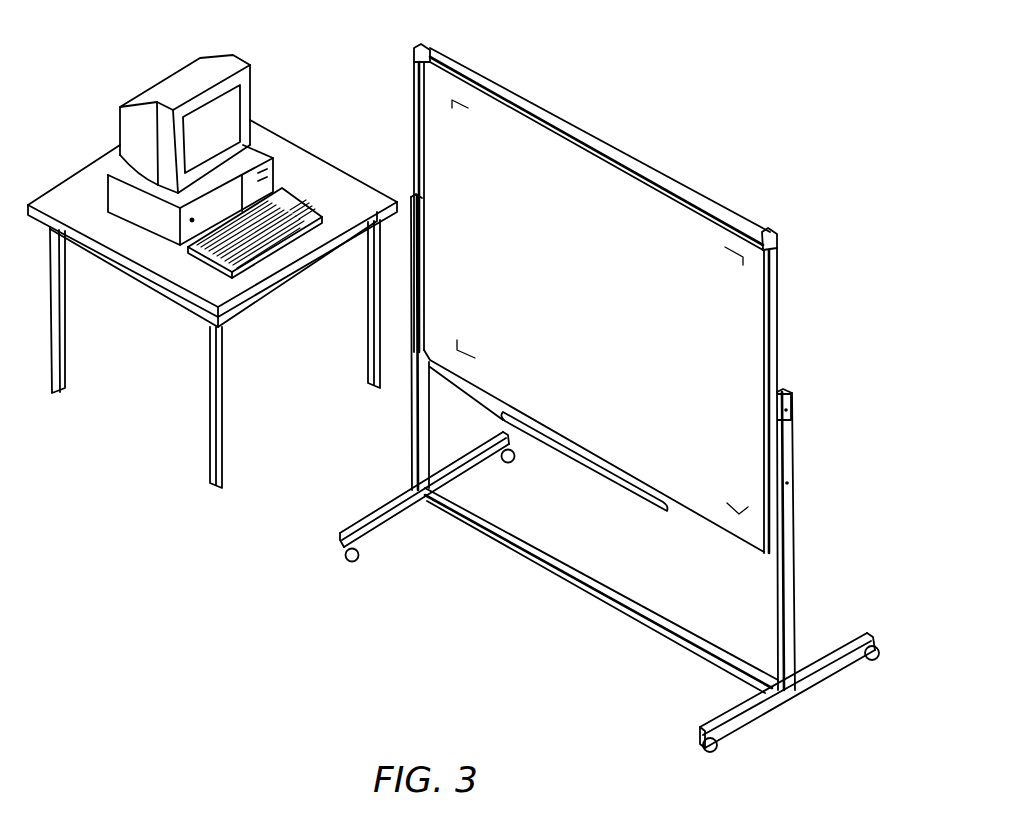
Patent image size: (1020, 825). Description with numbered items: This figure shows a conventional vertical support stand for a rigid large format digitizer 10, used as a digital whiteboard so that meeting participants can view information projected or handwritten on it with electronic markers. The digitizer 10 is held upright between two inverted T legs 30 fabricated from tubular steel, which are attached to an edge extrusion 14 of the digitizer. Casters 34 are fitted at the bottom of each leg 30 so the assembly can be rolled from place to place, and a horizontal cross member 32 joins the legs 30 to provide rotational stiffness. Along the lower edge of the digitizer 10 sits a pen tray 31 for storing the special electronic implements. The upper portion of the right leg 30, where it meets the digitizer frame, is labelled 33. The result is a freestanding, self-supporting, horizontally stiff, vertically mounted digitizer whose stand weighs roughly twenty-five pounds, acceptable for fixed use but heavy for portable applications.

The digitizer 10 is at (593, 157).
The edge extrusion 14 is at (733, 213).
The inverted "T" legs 30 is at (792, 542).
The pen tray 31 is at (638, 500).
The horizontal cross member 32 is at (548, 568).
The adjustable support post 33 is at (790, 403).
The casters 34 is at (717, 752).